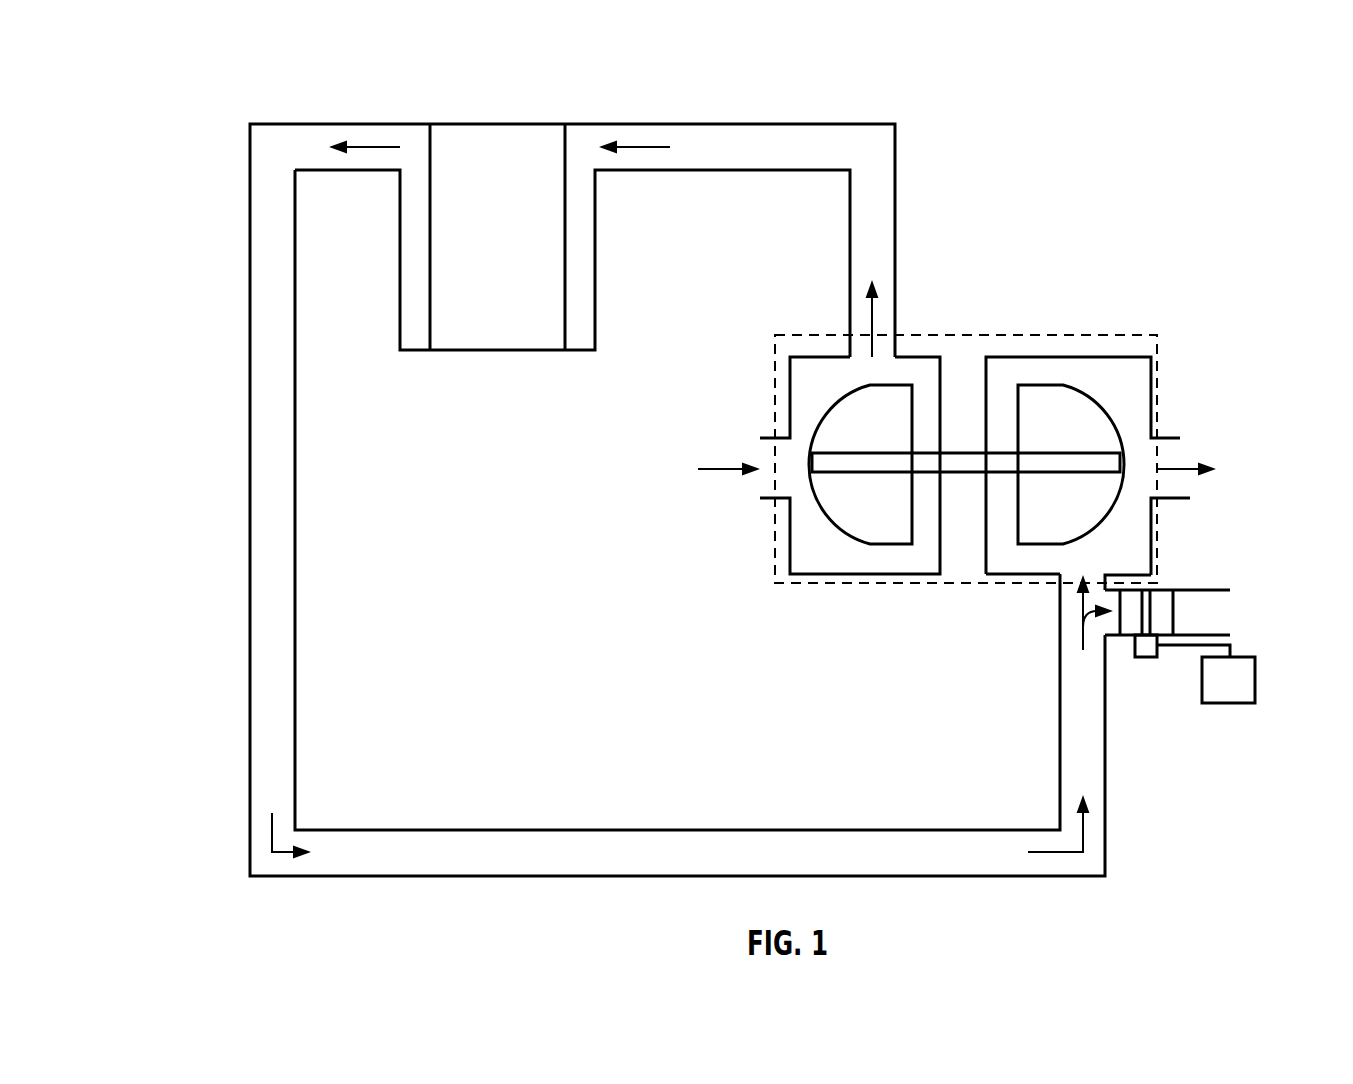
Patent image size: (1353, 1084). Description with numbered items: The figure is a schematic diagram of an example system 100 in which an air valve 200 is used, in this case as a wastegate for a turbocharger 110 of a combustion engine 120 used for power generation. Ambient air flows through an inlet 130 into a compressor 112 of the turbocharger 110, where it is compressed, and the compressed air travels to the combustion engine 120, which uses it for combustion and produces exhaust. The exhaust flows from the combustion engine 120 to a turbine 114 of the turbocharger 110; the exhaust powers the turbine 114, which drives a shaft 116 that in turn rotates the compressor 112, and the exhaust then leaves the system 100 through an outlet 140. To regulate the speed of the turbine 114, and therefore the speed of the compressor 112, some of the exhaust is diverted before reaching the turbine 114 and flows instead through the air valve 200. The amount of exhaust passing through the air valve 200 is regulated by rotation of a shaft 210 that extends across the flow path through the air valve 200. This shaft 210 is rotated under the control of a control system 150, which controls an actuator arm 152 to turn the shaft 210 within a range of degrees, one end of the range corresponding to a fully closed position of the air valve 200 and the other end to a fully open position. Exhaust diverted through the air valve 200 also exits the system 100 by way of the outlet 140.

The system 100 is at (161, 68).
The turbocharger 110 is at (1140, 333).
The compressor 112 is at (875, 530).
The turbine 114 is at (1048, 408).
The shaft 116 is at (951, 447).
The combustion engine 120 is at (523, 219).
The inlet 130 is at (760, 487).
The outlet 140 is at (1185, 482).
The control system 150 is at (1252, 693).
The actuator arm 152 is at (1140, 650).
The air valve 200 is at (1173, 610).
The shaft 210 is at (1155, 597).